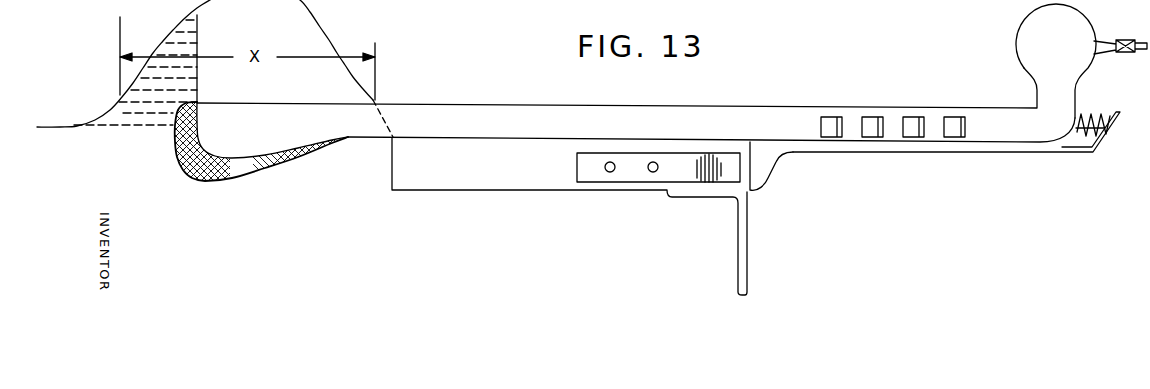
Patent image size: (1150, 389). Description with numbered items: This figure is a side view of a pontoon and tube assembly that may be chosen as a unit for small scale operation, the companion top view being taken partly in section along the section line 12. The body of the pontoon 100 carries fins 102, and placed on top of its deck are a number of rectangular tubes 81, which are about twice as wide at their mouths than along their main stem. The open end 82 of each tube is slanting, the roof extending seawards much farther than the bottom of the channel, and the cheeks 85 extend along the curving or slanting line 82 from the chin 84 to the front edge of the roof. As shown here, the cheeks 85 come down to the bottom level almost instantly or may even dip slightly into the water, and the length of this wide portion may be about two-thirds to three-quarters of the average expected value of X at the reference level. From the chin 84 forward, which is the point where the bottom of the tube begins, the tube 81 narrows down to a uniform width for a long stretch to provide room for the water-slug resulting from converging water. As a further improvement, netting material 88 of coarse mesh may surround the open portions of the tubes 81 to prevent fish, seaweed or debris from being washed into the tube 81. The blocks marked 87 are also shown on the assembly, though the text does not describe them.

The section line 12 is at (1032, 97).
The rectangular tube 81 is at (649, 104).
The open end 82 is at (208, 152).
The chin 84 is at (348, 138).
The cheeks 85 is at (299, 135).
The spacer blocks 87 is at (913, 125).
The netting material 88 is at (205, 181).
The pontoon body 100 is at (550, 175).
The fins 102 is at (1017, 59).